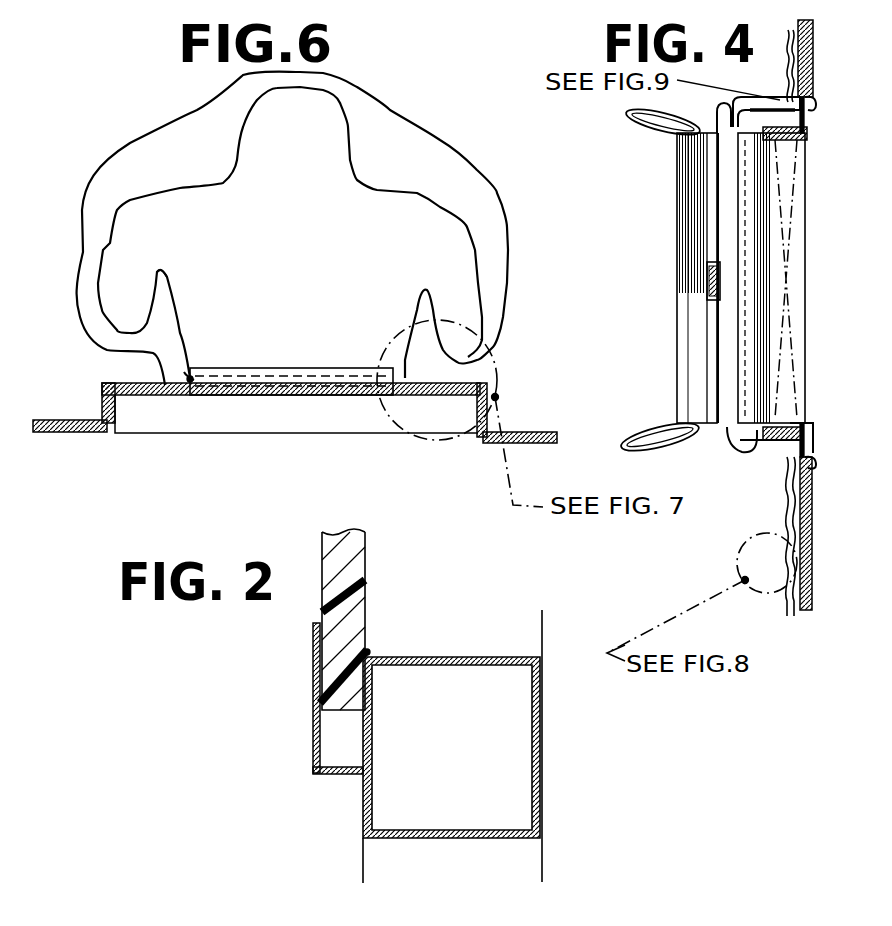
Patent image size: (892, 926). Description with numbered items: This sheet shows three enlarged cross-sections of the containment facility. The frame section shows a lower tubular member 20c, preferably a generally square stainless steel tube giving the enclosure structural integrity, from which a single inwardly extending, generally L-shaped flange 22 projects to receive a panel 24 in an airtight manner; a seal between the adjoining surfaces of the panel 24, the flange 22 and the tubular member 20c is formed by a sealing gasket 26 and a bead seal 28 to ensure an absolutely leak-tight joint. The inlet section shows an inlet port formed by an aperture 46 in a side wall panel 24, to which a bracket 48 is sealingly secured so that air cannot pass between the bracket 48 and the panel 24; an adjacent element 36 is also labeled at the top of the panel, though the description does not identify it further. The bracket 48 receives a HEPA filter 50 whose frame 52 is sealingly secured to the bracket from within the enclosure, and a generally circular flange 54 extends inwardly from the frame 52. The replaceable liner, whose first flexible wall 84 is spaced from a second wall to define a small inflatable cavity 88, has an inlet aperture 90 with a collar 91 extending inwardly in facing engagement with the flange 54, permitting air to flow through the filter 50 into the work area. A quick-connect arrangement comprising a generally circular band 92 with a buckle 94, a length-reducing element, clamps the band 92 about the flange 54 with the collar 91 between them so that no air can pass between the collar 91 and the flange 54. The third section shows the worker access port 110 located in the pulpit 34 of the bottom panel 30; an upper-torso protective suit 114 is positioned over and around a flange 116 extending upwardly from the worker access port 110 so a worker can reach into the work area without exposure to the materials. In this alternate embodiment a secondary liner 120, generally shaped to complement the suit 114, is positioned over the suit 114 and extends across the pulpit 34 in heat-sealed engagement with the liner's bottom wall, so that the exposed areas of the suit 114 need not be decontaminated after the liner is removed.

In FIG. 6, the secondary liner 120 is at (450, 148).
In FIG. 6, the upper-torso protective suit 114 is at (173, 293).
In FIG. 6, the flange 116 is at (192, 375).
In FIG. 6, the worker access port 110 is at (197, 396).
In FIG. 6, the pulpit 34 is at (117, 413).
In FIG. 6, the bottom panel 30 is at (53, 430).
In FIG. 4, the first flexible wall 84 is at (808, 50).
In FIG. 4, the membrane 36 is at (787, 53).
In FIG. 4, the inflatable cavity 88 is at (794, 92).
In FIG. 4, the aperture 46 is at (817, 98).
In FIG. 4, the bracket 48 is at (817, 120).
In FIG. 4, the frame 52 is at (806, 137).
In FIG. 4, the inlet aperture 90 is at (718, 134).
In FIG. 4, the collar 91 is at (630, 128).
In FIG. 4, the band 92 is at (710, 227).
In FIG. 4, the buckle 94 is at (710, 278).
In FIG. 4, the flange 54 is at (688, 372).
In FIG. 4, the HEPA filter 50 is at (795, 250).
In FIG. 4, the panel 24 is at (813, 523).
In FIG. 2, the panel 24 is at (355, 563).
In FIG. 2, the bead seal 28 is at (370, 652).
In FIG. 2, the sealing gasket 26 is at (313, 671).
In FIG. 2, the L-shaped flange 22 is at (313, 757).
In FIG. 2, the lower tubular member 20c is at (543, 775).